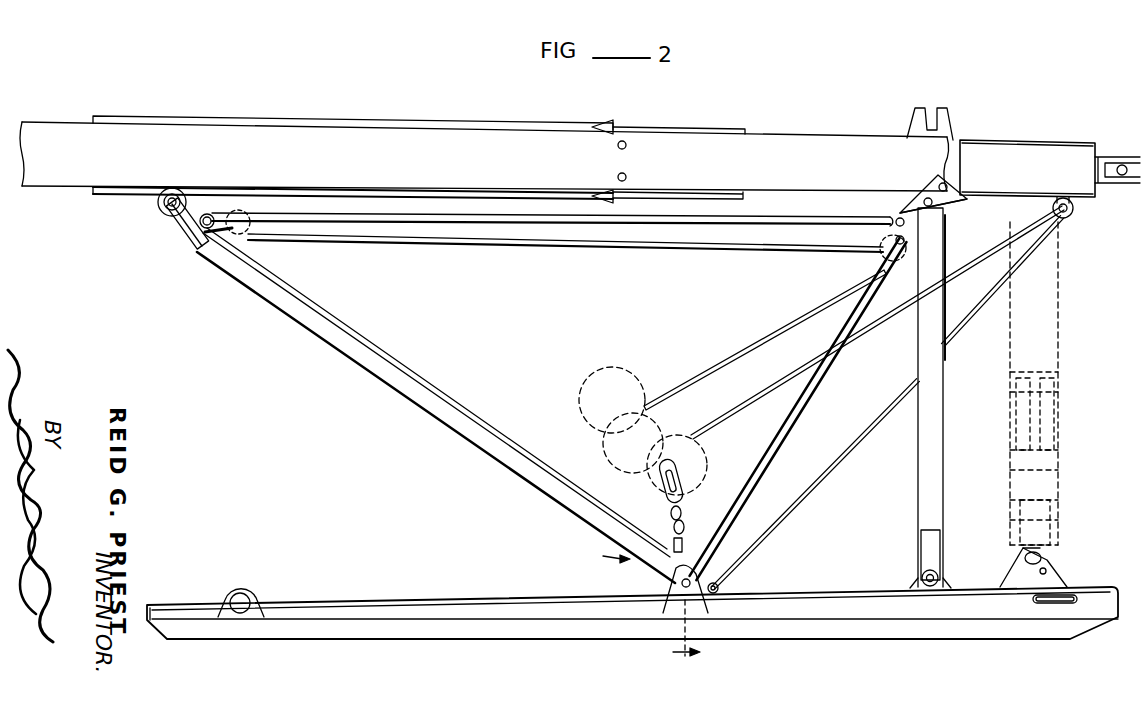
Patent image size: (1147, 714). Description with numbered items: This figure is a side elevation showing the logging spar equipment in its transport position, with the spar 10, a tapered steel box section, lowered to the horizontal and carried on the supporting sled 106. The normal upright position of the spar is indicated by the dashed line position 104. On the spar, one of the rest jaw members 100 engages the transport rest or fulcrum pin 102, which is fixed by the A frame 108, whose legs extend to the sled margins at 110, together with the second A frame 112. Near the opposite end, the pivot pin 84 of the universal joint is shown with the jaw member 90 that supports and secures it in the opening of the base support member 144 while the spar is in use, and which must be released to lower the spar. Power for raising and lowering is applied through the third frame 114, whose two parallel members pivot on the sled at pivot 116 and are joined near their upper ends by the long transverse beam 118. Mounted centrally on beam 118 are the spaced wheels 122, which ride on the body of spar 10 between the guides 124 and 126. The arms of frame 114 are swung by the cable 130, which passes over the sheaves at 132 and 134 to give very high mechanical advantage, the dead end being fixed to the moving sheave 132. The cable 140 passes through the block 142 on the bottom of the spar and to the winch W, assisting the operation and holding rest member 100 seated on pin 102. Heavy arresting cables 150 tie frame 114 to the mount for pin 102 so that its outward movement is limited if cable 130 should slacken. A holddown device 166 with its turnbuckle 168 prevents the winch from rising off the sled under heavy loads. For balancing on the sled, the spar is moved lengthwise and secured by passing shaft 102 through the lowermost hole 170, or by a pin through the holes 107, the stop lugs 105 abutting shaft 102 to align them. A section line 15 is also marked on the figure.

The spar 10 is at (708, 157).
The section line 15 is at (641, 609).
The pivot pin 84 is at (1122, 162).
The jaw member 90 is at (1041, 557).
The rest jaw member 100 is at (938, 133).
The fulcrum pin 102 is at (963, 203).
The dashed line position 104 is at (1040, 312).
The stop lugs 105 is at (606, 122).
The supporting sled 106 is at (757, 627).
The holes 107 is at (945, 180).
The A frame 108 is at (918, 438).
The legs of A frame 110 is at (918, 577).
The second A frame 112 is at (800, 398).
The frame 114 is at (403, 396).
The pivot 116 is at (678, 596).
The transverse beam 118 is at (188, 242).
The rollers or wheels 122 is at (159, 208).
The guide 124 is at (471, 128).
The guide 126 is at (458, 194).
The cable 130 is at (733, 359).
The moving sheave 132 is at (248, 234).
The sheaves 134 is at (860, 249).
The cable 140 is at (835, 470).
The block 142 is at (1070, 216).
The base support member 144 is at (1015, 580).
The arresting cables 150 is at (467, 224).
The holddown device 166 is at (674, 490).
The turnbuckle 168 is at (674, 530).
The lowermost hole 170 is at (618, 176).
The winch W is at (664, 418).